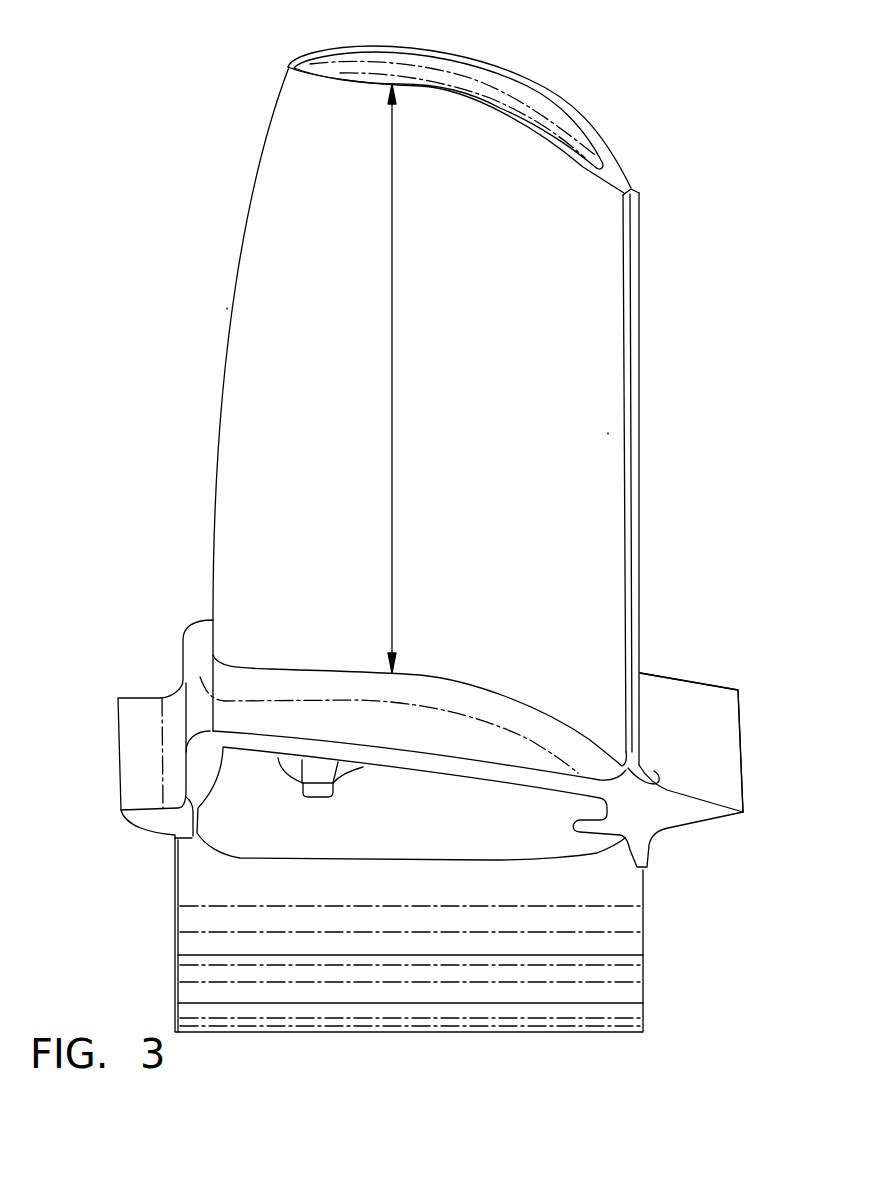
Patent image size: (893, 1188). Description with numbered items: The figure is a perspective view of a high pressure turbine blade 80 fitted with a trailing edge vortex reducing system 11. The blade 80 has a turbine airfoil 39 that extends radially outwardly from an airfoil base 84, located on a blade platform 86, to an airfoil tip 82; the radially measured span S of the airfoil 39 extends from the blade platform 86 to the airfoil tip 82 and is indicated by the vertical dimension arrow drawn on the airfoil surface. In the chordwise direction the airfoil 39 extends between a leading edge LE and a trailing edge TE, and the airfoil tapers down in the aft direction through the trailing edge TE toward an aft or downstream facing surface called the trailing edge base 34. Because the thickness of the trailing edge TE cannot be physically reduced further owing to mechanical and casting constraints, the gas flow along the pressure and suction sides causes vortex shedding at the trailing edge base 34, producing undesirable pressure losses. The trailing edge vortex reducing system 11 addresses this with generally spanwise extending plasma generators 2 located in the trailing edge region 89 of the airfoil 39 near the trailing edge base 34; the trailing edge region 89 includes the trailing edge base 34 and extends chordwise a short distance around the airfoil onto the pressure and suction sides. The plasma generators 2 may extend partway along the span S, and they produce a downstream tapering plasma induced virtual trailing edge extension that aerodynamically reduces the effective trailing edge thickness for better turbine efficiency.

The trailing edge vortex reducing system 11 is at (664, 364).
The plasma generators 2 is at (633, 193).
The trailing edge base 34 is at (632, 211).
The airfoil 39 is at (247, 475).
The airfoil tip 82 is at (320, 83).
The trailing edge region 89 is at (608, 433).
The high pressure turbine blade 80 is at (166, 627).
The airfoil base 84 is at (655, 772).
The blade platform 86 is at (695, 692).
The leading edge LE is at (227, 308).
The trailing edge TE is at (641, 484).
The span S is at (392, 391).